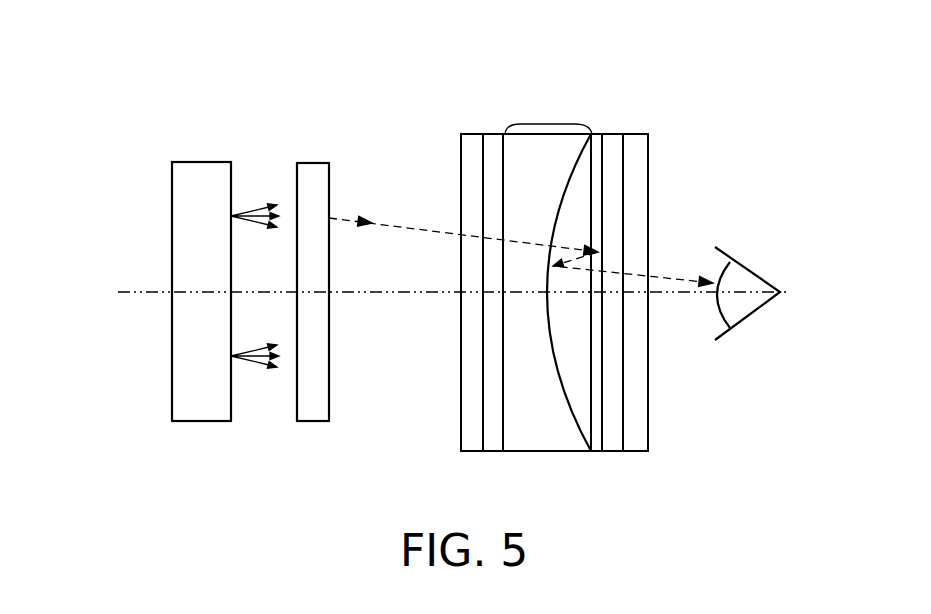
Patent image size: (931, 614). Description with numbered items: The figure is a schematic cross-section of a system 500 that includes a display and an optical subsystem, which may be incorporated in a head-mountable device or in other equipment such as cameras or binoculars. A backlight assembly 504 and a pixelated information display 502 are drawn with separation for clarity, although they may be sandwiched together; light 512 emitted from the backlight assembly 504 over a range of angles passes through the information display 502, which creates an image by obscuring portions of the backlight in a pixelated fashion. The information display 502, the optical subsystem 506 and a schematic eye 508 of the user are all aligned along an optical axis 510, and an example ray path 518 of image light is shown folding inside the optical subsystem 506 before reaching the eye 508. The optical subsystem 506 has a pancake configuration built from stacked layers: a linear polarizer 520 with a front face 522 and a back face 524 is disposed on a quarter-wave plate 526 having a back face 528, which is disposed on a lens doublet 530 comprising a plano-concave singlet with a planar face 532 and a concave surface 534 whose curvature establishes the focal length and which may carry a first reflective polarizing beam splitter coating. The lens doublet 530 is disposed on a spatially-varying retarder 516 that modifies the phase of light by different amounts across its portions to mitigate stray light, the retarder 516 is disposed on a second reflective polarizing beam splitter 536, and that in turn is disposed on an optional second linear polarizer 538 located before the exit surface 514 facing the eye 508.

The system 500 is at (271, 43).
The information display 502 is at (311, 163).
The backlight assembly 504 is at (197, 162).
The optical subsystem 506 is at (552, 62).
The eye 508 is at (725, 248).
The optical axis 510 is at (158, 292).
The light 512 is at (257, 370).
The exit surface 514 is at (650, 396).
The spatially-varying retarder 516 is at (597, 453).
The ray path 518 is at (437, 232).
The linear polarizer 520 is at (471, 134).
The front face 522 is at (461, 424).
The back face 524 is at (487, 434).
The quarter-wave plate 526 is at (498, 134).
The back face 528 is at (505, 430).
The lens doublet 530 is at (548, 115).
The planar face 532 is at (592, 135).
The concave surface 534 is at (547, 258).
The second reflective polarizing beam splitter 536 is at (613, 451).
The second linear polarizer 538 is at (636, 134).